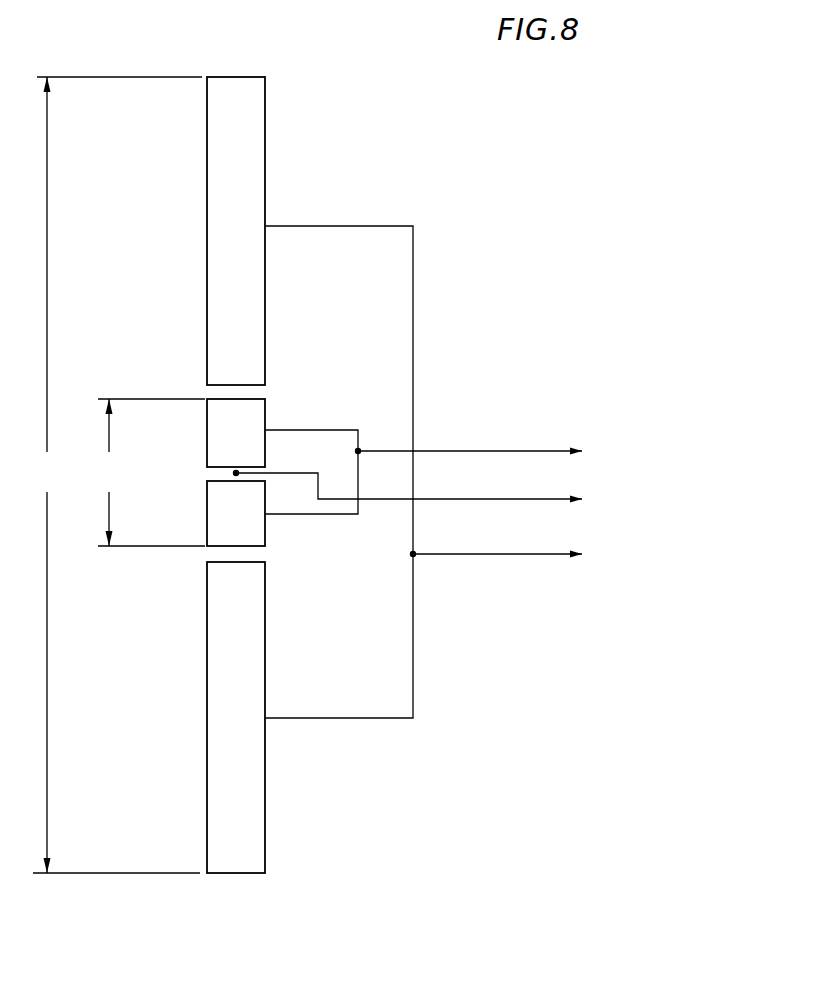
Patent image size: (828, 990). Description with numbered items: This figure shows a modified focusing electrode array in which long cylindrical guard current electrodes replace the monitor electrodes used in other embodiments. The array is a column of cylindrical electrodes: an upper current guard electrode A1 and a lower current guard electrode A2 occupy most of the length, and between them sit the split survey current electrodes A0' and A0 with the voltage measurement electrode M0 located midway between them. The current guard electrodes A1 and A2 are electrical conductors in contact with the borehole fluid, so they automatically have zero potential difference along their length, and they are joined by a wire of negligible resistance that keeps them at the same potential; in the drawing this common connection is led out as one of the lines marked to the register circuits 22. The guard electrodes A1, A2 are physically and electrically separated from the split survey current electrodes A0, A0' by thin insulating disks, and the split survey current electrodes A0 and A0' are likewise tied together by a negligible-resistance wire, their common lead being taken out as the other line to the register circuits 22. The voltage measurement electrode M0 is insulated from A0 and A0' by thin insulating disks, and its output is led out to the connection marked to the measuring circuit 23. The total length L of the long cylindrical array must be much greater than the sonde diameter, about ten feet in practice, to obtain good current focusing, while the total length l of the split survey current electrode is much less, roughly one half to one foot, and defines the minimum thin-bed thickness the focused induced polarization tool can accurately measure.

The registers R0 and R1 22 is at (483, 472).
The circuit receiving M0 output 23 is at (451, 492).
The current guard electrode A1 is at (214, 231).
The split survey current electrode A0' is at (213, 433).
The split survey current electrode A0 is at (213, 513).
The current guard electrode A2 is at (210, 717).
The voltage measurement electrode M0 is at (198, 476).
The total length of the focusing array L is at (117, 475).
The total length of the split survey current electrode l is at (151, 472).